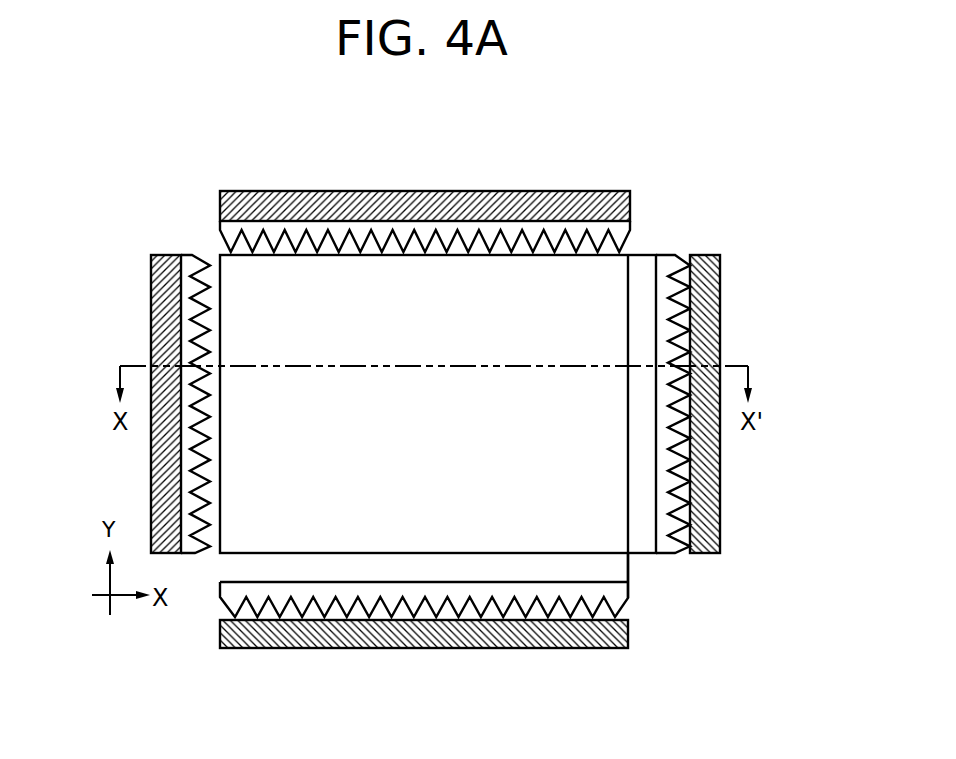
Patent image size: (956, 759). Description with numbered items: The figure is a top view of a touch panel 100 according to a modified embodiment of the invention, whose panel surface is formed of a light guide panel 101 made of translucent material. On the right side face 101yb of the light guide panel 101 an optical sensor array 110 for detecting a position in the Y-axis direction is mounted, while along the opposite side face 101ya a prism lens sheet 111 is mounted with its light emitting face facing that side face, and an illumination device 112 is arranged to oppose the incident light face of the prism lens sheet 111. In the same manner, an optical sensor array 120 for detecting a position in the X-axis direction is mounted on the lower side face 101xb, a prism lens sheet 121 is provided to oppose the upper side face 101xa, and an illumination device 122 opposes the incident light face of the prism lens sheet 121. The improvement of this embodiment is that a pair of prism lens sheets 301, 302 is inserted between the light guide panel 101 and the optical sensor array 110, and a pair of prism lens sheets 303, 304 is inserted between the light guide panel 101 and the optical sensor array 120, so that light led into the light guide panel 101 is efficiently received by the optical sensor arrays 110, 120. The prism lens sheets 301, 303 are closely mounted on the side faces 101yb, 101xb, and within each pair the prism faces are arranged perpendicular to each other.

The touch panel 100 is at (603, 168).
The light guide panel 101 is at (572, 510).
The side face 101xa is at (360, 256).
The side face 101xb is at (355, 553).
The side face 101ya is at (220, 486).
The side face 101yb is at (627, 435).
The optical sensor array 110 is at (722, 277).
The prism lens sheet 111 is at (198, 555).
The illumination device 112 is at (170, 254).
The optical sensor array 120 is at (629, 635).
The prism lens sheet 121 is at (219, 236).
The illumination device 122 is at (320, 191).
The prism lens sheet 301 is at (643, 253).
The prism lens sheet 302 is at (667, 255).
The prism lens sheet 303 is at (629, 567).
The prism lens sheet 304 is at (621, 602).